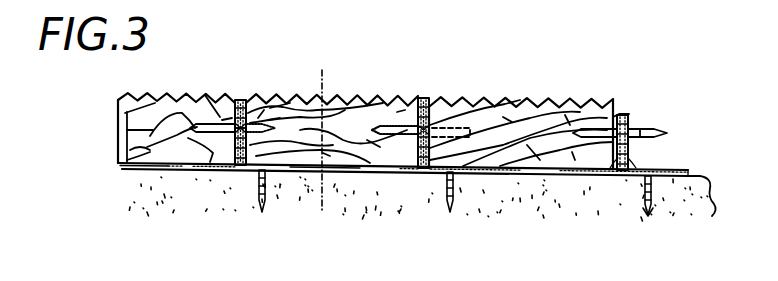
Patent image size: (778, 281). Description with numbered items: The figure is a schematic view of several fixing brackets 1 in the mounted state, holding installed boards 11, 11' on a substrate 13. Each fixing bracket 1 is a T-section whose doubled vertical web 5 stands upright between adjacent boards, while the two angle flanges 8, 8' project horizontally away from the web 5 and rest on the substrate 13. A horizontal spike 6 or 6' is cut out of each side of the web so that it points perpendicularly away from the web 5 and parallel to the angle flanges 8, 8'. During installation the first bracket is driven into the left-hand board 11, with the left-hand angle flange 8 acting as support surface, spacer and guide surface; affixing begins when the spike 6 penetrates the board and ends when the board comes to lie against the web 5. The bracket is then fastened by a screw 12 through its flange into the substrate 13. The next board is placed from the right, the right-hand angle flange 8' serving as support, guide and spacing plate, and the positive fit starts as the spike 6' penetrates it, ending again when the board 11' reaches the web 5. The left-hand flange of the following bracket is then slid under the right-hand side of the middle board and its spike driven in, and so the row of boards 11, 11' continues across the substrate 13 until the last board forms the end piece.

The fixing bracket 1 is at (240, 97).
The vertical web 5 is at (222, 170).
The spike 6 is at (232, 95).
The spike 6' is at (292, 72).
The angle flange 8 is at (147, 215).
The angle flange 8' is at (325, 172).
The board 11 is at (365, 97).
The board 11' is at (332, 93).
The screw 12 is at (264, 205).
The substrate 13 is at (585, 202).